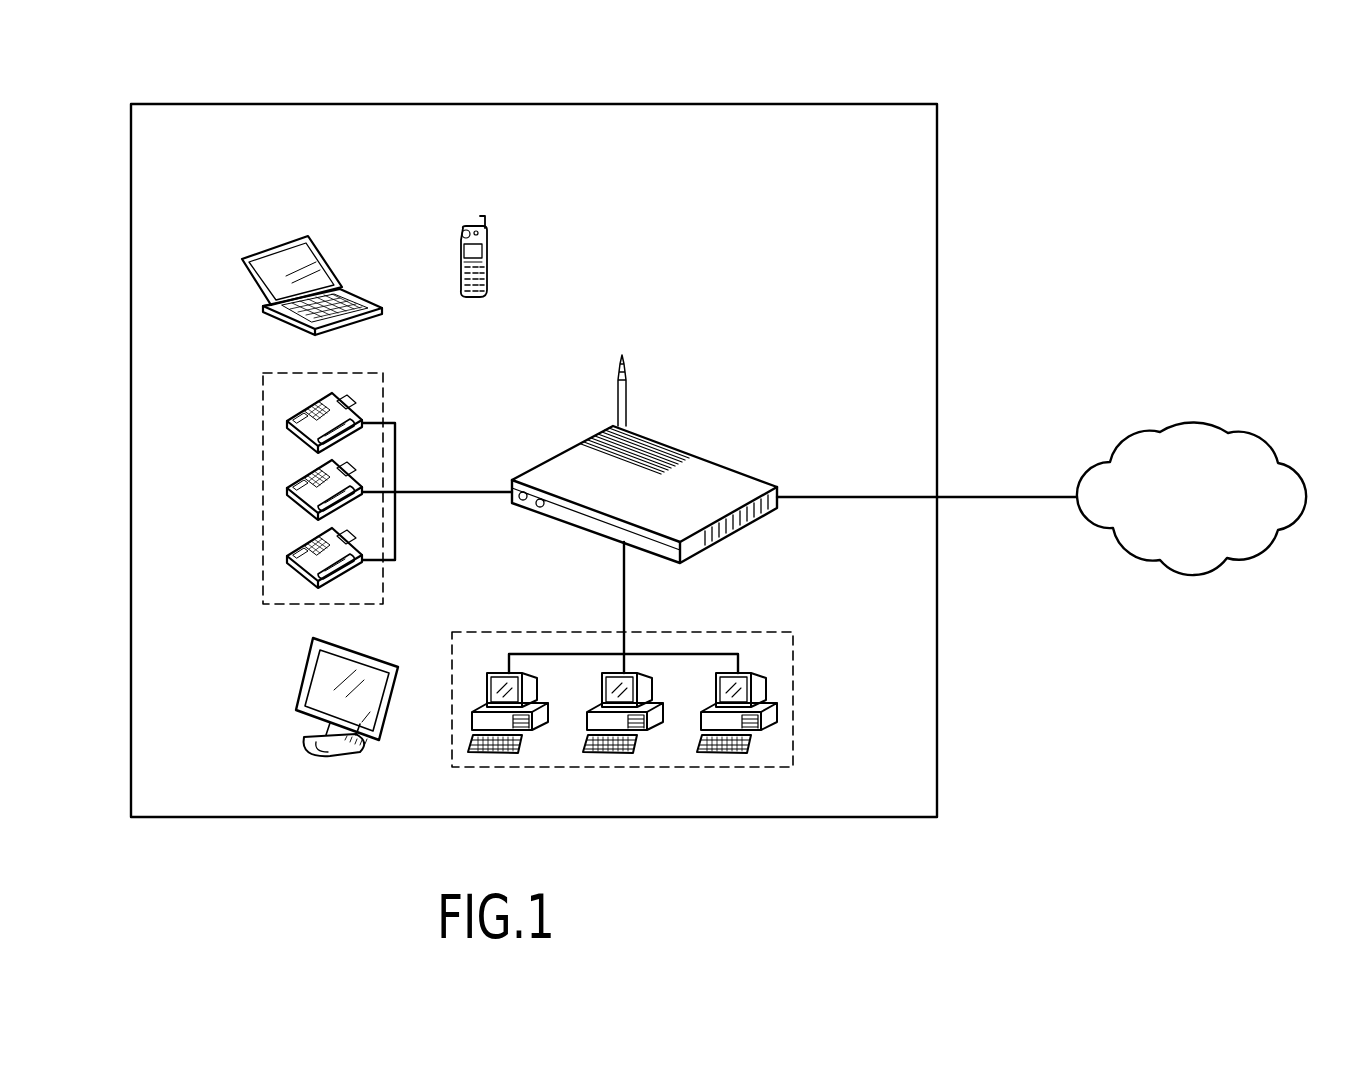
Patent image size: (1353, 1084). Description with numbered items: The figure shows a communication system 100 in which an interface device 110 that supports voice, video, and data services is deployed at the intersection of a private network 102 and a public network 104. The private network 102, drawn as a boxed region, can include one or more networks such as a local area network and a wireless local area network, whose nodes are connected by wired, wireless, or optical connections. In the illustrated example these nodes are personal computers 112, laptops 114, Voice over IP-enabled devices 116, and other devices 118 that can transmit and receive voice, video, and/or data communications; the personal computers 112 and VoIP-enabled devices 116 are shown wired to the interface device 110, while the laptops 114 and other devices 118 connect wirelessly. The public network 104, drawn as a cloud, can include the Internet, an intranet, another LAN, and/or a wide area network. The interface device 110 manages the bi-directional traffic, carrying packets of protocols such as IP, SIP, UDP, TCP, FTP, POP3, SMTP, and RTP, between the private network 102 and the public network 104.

The communication system 100 is at (1161, 229).
The private network 102 is at (800, 213).
The public network 104 is at (1193, 575).
The interface device 110 is at (730, 467).
The personal computers 112 is at (793, 735).
The laptops 114 is at (277, 243).
The Voice over IP (VoIP)-enabled devices 116 is at (263, 450).
The other devices 118 is at (470, 224).